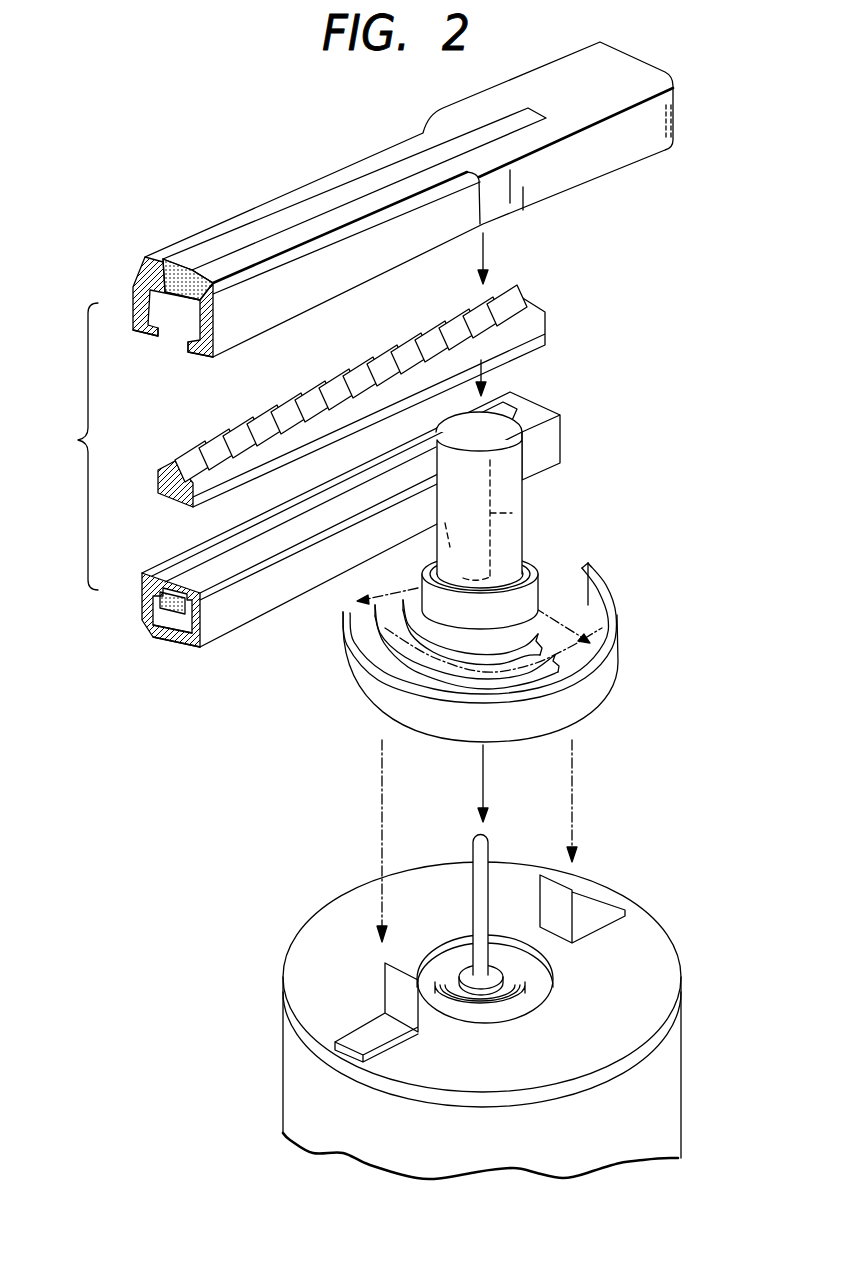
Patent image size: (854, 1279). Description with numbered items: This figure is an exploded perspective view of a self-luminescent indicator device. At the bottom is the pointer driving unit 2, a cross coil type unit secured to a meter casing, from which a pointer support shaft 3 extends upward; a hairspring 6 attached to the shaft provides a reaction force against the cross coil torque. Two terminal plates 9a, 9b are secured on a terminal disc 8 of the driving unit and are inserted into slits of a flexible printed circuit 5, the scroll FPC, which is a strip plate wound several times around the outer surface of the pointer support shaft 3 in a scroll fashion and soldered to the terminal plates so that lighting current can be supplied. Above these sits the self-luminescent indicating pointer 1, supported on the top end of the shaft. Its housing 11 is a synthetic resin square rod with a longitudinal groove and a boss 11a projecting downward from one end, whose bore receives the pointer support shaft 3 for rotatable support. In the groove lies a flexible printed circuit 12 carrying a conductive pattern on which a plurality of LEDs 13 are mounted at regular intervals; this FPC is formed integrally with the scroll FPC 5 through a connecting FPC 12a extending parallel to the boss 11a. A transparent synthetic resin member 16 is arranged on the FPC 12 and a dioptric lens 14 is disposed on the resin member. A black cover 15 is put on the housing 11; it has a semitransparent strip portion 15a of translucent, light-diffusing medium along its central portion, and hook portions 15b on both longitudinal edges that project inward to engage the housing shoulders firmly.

The self-luminescent indicating pointer 1 is at (77, 446).
The pointer driving unit 2 is at (290, 1067).
The pointer support shaft 3 is at (489, 840).
The flexible printed circuit (scroll FPC) 5 is at (352, 676).
The hairspring 6 is at (444, 1010).
The terminal disc 8 is at (650, 958).
The terminal plate 9a is at (558, 902).
The terminal plate 9b is at (390, 985).
The housing 11 is at (295, 597).
The boss 11a is at (525, 532).
The flexible printed circuit (FPC) 12 is at (178, 645).
The connecting FPC 12a is at (523, 509).
The LEDs 13 is at (155, 630).
The dioptric lens 14 is at (196, 458).
The cover 15 is at (270, 203).
The semitransparent strip portion 15a is at (178, 262).
The hook portions 15b is at (192, 349).
The transparent synthetic resin member 16 is at (167, 588).